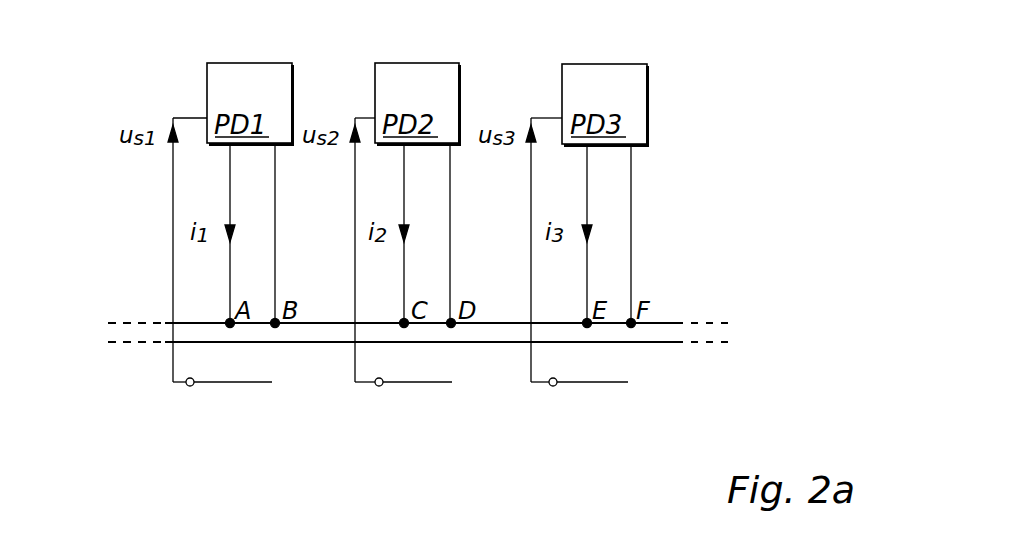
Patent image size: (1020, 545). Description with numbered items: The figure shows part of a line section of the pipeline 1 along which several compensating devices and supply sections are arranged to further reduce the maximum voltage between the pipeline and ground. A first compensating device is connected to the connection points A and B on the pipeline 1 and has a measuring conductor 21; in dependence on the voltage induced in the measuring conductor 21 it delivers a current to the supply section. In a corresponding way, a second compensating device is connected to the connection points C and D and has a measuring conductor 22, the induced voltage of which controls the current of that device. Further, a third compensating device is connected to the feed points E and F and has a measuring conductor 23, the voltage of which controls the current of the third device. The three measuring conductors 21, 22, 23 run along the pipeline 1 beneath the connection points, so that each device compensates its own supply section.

The two-wire bus line 1 is at (662, 322).
The measuring conductor 21 is at (228, 383).
The measuring conductor 22 is at (414, 383).
The measuring conductor 23 is at (590, 383).